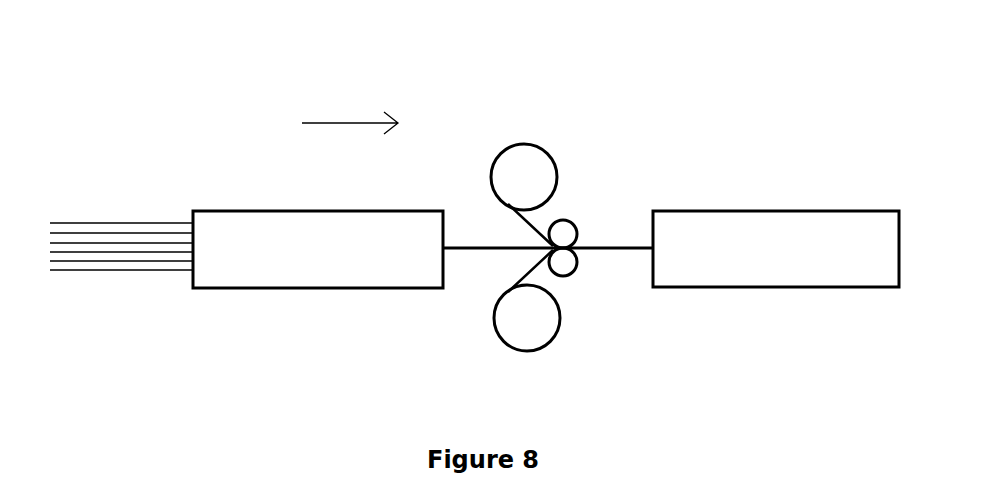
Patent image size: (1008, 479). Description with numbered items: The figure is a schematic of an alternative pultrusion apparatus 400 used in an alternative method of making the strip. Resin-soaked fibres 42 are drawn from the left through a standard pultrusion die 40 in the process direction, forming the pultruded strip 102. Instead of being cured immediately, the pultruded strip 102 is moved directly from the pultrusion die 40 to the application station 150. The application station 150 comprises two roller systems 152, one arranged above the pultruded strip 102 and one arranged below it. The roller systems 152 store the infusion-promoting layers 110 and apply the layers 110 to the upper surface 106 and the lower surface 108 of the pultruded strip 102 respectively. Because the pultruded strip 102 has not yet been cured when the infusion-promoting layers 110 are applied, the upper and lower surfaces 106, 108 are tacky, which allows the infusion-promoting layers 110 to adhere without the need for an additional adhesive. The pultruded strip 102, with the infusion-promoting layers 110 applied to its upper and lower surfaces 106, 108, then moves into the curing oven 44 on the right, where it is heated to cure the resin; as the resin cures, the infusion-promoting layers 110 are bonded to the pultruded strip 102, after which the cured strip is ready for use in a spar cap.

The alternative pultrusion apparatus 400 is at (92, 83).
The resin-soaked fibres 42 is at (113, 250).
The pultrusion die 40 is at (270, 232).
The curing oven 44 is at (792, 230).
The pultruded strip 102 is at (462, 253).
The upper surface 106 is at (475, 246).
The lower surface 108 is at (492, 252).
The application station 150 is at (583, 106).
The roller systems 152 is at (500, 130).
The infusion-promoting layers 110 is at (547, 235).